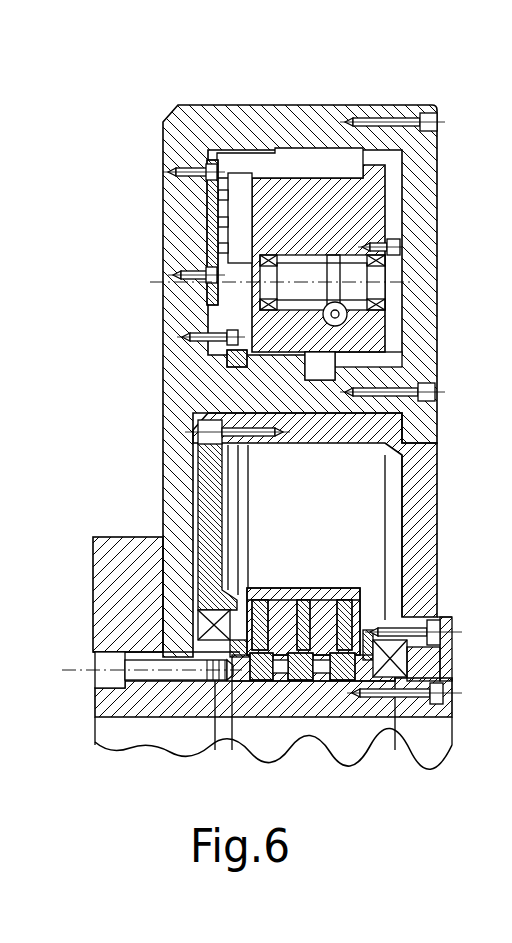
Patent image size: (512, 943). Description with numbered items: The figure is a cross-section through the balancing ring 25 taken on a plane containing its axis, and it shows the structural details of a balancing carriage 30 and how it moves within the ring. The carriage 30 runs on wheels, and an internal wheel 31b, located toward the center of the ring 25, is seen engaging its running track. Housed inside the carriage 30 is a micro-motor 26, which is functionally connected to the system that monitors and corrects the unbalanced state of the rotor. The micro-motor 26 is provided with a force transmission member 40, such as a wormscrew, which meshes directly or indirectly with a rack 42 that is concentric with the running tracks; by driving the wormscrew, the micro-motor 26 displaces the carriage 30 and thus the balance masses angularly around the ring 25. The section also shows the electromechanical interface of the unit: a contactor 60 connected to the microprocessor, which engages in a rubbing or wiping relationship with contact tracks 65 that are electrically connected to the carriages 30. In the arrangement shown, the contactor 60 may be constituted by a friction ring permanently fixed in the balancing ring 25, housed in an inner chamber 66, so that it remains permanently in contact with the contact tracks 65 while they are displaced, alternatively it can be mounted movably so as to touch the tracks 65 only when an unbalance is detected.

The balancing ring 25 is at (156, 136).
The carriage 30 is at (313, 195).
The force transmission member 40 is at (210, 232).
The rack 42 is at (240, 312).
The micro-motor 26 is at (355, 276).
The internal wheel 31b is at (320, 362).
The inner chamber 66 is at (360, 497).
The contactor 60 is at (330, 587).
The contact tracks 65 is at (268, 672).